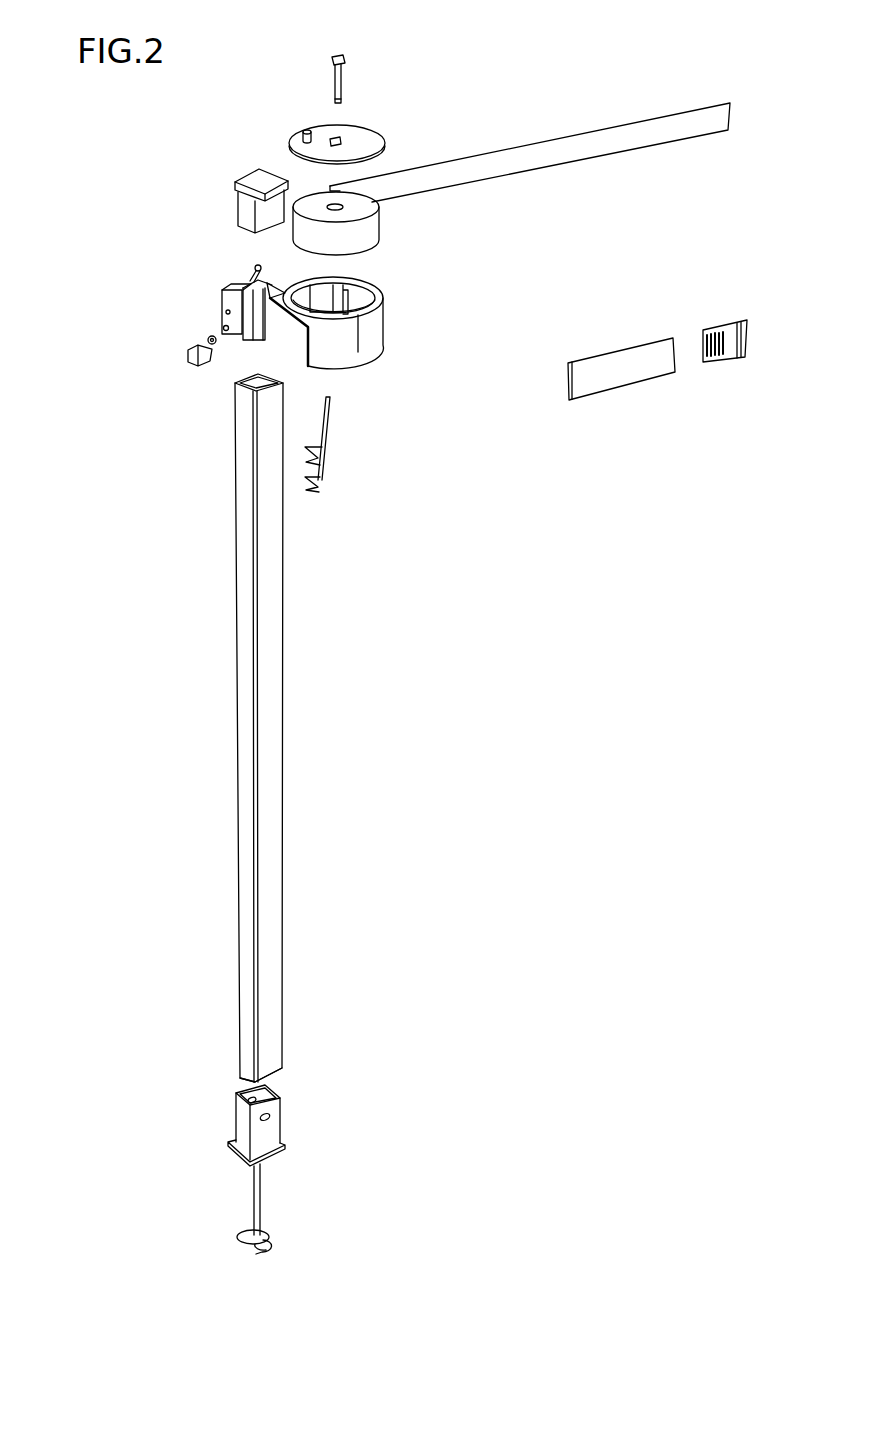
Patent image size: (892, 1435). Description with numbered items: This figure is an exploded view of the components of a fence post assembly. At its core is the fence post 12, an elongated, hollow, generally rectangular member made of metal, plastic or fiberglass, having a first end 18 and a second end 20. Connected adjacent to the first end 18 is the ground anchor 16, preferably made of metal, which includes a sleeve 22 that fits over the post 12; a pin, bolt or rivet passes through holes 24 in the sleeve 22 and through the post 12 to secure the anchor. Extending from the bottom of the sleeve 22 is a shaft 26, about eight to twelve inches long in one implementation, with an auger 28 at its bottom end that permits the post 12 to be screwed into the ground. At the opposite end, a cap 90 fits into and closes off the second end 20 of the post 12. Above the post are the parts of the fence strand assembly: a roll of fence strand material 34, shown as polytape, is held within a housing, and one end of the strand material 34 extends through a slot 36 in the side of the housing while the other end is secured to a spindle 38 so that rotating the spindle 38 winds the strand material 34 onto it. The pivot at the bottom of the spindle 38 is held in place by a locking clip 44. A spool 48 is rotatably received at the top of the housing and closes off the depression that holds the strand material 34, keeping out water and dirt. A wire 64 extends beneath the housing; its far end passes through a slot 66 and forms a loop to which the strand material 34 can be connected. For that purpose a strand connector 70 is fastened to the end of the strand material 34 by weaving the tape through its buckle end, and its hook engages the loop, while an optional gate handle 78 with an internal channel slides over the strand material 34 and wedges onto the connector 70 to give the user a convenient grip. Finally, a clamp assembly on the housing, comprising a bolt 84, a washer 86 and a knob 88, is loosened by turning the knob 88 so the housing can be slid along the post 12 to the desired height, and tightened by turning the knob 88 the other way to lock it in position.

The fence post 12 is at (242, 523).
The ground anchor 16 is at (232, 1142).
The first end 18 is at (285, 1068).
The second end 20 is at (235, 385).
The sleeve 22 is at (283, 1130).
The holes 24 is at (271, 1118).
The shaft 26 is at (262, 1197).
The auger 28 is at (270, 1245).
The fence strand material 34 is at (470, 166).
The slot 36 is at (342, 297).
The spindle 38 is at (333, 56).
The locking clip 44 is at (327, 484).
The spool 48 is at (322, 136).
The wire 64 is at (330, 418).
The slot 66 is at (349, 286).
The strand connector 70 is at (732, 330).
The gate handle 78 is at (607, 368).
The bolt 84 is at (247, 270).
The washer 86 is at (208, 337).
The knob 88 is at (188, 350).
The cap 90 is at (245, 206).